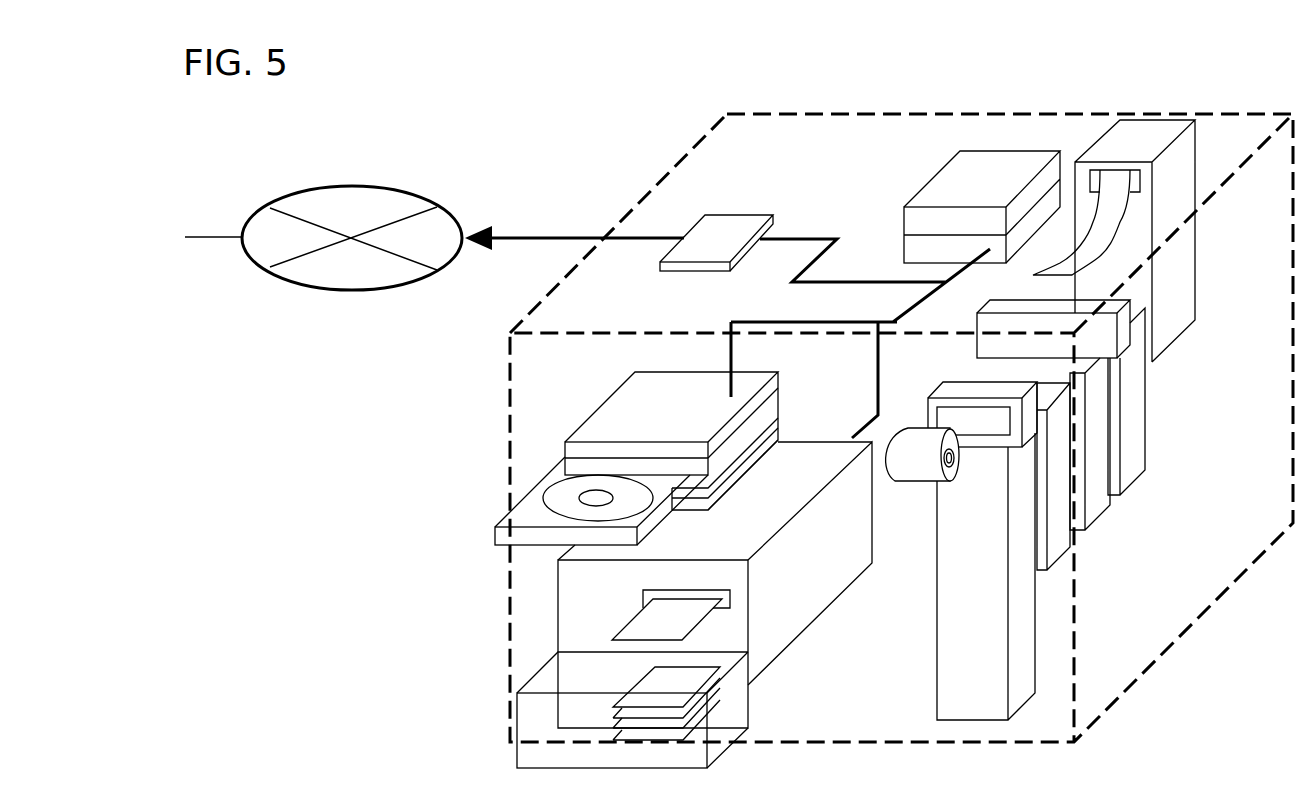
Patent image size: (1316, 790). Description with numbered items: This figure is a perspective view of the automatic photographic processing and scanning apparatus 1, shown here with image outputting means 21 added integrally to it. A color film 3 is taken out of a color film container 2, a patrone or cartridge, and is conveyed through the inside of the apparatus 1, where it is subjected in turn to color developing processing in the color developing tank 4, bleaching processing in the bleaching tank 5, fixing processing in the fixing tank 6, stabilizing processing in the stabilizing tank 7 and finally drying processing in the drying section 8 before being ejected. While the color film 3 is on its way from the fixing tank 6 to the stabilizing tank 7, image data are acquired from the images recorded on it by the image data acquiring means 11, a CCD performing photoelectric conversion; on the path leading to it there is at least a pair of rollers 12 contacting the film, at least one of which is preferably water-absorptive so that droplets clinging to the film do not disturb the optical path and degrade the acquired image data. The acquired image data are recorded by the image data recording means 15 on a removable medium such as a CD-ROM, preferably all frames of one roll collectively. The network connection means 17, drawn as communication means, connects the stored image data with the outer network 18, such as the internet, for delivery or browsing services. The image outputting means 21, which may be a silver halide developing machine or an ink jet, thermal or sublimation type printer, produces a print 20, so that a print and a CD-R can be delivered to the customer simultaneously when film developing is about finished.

The automatic photographic processing and scanning apparatus 1 is at (705, 137).
The color film container 2 is at (913, 482).
The color film 3 is at (1121, 215).
The color developing tank 4 is at (972, 721).
The bleaching tank 5 is at (1056, 567).
The fixing tank 6 is at (1106, 513).
The stabilizing tank 7 is at (1138, 477).
The drying section 8 is at (1100, 138).
The image data acquiring means 11 is at (1130, 335).
The rollers 12 is at (937, 176).
The image data recording means 15 is at (572, 435).
The network connection means 17 is at (736, 212).
The outer network 18 is at (356, 187).
The print 20 is at (633, 685).
The image outputting means 21 is at (818, 625).